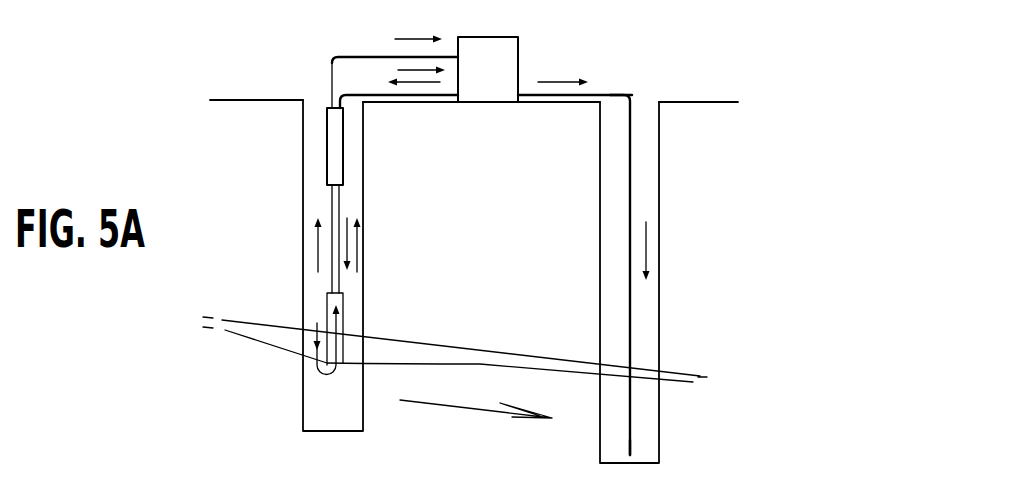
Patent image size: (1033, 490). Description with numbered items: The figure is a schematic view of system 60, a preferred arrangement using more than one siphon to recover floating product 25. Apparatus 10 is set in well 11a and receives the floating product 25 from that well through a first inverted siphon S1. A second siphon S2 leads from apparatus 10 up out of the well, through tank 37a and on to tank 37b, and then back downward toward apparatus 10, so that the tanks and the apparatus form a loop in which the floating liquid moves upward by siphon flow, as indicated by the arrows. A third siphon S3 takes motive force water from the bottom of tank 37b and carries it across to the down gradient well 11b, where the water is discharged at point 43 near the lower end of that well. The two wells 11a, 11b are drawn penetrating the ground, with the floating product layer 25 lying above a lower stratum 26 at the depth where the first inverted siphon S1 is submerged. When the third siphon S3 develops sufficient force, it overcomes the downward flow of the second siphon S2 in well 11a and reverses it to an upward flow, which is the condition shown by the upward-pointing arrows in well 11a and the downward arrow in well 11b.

The apparatus 10 is at (370, 285).
The well 11a is at (303, 238).
The well 11b is at (659, 182).
The floating product 25 is at (263, 387).
The lower stratum layer 26 is at (273, 433).
The tank 37a is at (343, 147).
The tank 37b is at (488, 69).
The discharge point 43 is at (633, 453).
The system 60 is at (507, 268).
The first inverted siphon S1 is at (317, 313).
The second siphon S2 is at (348, 84).
The third siphon S3 is at (610, 85).